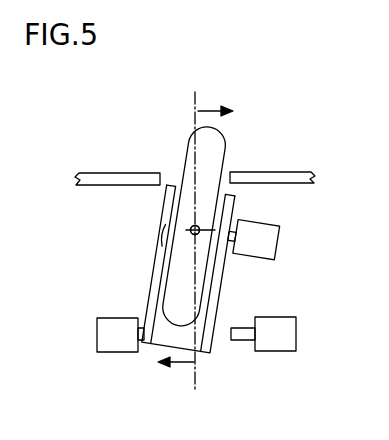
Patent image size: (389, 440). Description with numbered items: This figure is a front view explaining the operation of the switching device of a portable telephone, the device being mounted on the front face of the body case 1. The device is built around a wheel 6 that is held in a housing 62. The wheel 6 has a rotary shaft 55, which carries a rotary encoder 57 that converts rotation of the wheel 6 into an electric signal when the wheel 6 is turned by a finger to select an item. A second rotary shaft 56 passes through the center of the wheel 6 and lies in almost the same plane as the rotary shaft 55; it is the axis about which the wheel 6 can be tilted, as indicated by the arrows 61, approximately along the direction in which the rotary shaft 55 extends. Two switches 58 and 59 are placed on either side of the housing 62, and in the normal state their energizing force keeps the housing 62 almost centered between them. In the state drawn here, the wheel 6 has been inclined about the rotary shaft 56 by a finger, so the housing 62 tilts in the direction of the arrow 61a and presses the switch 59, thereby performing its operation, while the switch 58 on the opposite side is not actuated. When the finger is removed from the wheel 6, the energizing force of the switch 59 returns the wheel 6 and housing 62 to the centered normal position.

The body case 1 is at (298, 176).
The wheel 6 is at (208, 152).
The rotary shaft 55 is at (186, 230).
The rotary shaft 56 is at (188, 225).
The rotary encoder 57 is at (262, 240).
The switch 58 is at (275, 335).
The switch 59 is at (117, 335).
The arrows 61 is at (208, 105).
The arrow 61a is at (183, 366).
The housing 62 is at (218, 272).